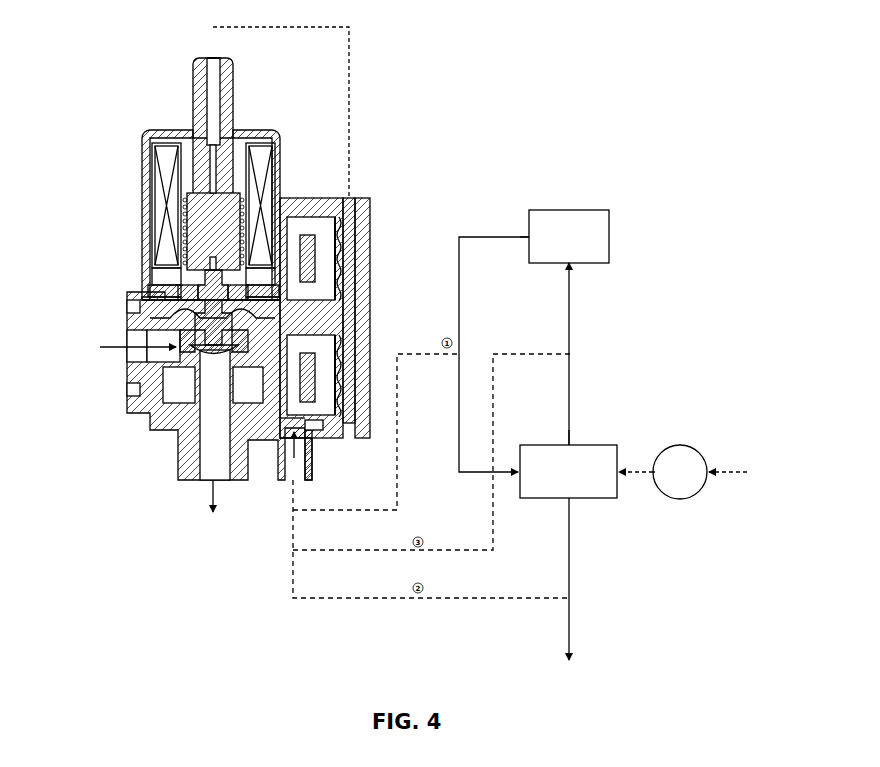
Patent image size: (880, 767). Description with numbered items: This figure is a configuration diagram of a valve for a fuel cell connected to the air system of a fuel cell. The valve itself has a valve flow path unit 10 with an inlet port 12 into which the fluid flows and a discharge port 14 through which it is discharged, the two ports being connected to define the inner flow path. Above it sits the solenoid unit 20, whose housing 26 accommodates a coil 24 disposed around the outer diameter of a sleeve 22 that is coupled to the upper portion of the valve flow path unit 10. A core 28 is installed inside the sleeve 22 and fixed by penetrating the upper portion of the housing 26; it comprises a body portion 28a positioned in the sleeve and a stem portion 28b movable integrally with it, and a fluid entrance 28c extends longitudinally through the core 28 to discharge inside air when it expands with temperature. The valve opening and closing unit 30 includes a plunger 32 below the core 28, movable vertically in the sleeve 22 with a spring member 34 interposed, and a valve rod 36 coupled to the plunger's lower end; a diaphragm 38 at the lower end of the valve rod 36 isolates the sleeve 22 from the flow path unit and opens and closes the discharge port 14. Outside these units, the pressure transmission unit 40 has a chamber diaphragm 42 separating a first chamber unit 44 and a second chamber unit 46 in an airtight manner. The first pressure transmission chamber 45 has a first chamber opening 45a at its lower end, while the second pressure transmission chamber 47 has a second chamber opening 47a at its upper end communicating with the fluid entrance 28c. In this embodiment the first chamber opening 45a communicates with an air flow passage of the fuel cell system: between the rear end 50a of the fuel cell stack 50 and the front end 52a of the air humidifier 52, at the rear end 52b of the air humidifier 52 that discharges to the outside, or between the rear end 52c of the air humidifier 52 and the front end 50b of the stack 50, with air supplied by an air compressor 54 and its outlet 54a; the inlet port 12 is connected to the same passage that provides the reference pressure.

The valve flow path unit 10 is at (102, 317).
The inlet port 12 is at (127, 355).
The discharge port 14 is at (200, 405).
The solenoid unit 20 is at (106, 137).
The sleeve 22 is at (155, 301).
The coil 24 is at (160, 215).
The housing 26 is at (142, 134).
The core 28 is at (226, 117).
The body portion 28a is at (232, 152).
The stem portion 28b is at (230, 90).
The fluid entrance 28c is at (213, 76).
The valve opening and closing unit 30 is at (153, 267).
The plunger 32 is at (228, 200).
The spring member 34 is at (243, 232).
The valve rod 36 is at (180, 331).
The diaphragm 38 is at (177, 355).
The pressure transmission unit 40 is at (387, 228).
The chamber diaphragm 42 is at (310, 363).
The first chamber unit 44 is at (327, 440).
The first pressure transmission chamber 45 is at (333, 423).
The first chamber opening 45a is at (300, 420).
The second chamber unit 46 is at (370, 275).
The second pressure transmission chamber 47 is at (347, 377).
The second chamber opening 47a is at (352, 198).
The fuel cell stack 50 is at (586, 210).
The rear end of the stack 50a is at (529, 237).
The front end of the stack 50b is at (573, 265).
The air humidifier 52 is at (583, 498).
The front end of the air humidifier 52a is at (620, 470).
The rear end of the air humidifier 52b is at (565, 498).
The rear end of the air humidifier 52c is at (570, 445).
The air compressor 54 is at (688, 447).
The compressor outlet 54a is at (654, 473).